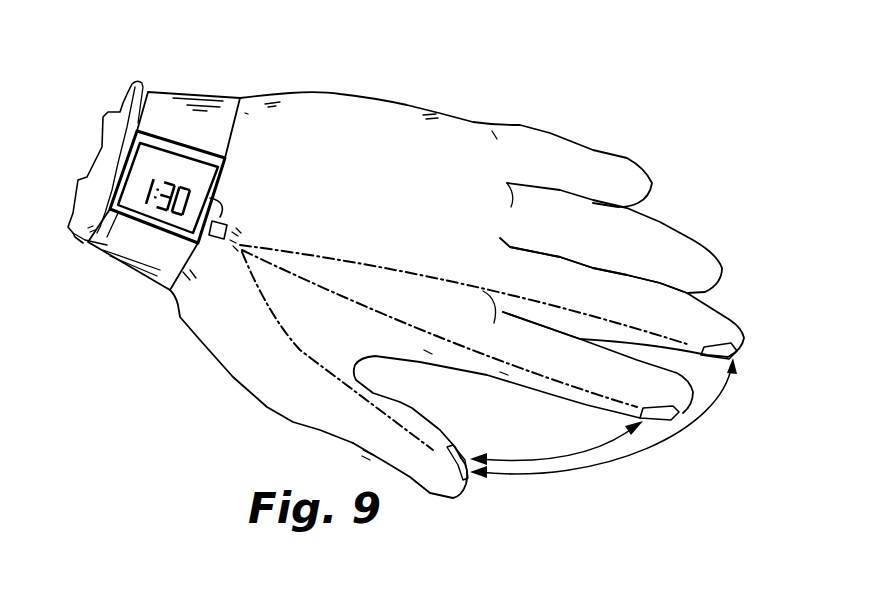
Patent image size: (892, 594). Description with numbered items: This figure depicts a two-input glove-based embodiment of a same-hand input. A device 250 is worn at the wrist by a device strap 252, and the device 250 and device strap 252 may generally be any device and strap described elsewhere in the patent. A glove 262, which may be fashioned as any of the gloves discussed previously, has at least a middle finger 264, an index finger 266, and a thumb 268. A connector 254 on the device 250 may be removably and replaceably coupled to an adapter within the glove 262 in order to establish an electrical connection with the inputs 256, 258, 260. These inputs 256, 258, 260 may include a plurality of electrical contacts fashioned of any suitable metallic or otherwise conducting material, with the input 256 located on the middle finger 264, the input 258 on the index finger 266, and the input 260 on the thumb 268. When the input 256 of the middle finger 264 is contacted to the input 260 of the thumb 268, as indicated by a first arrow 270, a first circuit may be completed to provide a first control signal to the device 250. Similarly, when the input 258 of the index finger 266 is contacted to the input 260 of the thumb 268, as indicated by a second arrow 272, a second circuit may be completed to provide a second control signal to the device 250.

The device 250 is at (103, 152).
The device strap 252 is at (197, 94).
The connector 254 is at (222, 217).
The input 256 is at (733, 323).
The input 258 is at (670, 421).
The input 260 is at (466, 485).
The glove 262 is at (345, 100).
The middle finger 264 is at (718, 310).
The index finger 266 is at (685, 375).
The thumb 268 is at (428, 498).
The first arrow 270 is at (707, 412).
The second arrow 272 is at (563, 456).